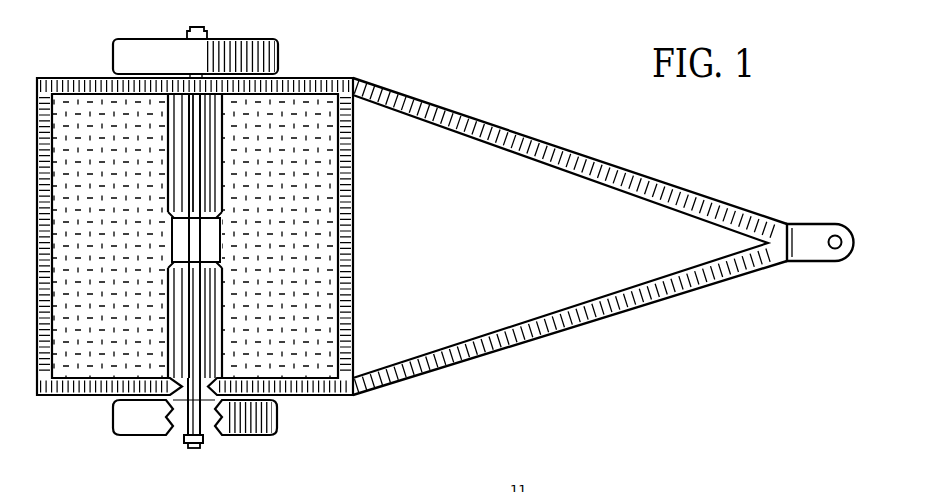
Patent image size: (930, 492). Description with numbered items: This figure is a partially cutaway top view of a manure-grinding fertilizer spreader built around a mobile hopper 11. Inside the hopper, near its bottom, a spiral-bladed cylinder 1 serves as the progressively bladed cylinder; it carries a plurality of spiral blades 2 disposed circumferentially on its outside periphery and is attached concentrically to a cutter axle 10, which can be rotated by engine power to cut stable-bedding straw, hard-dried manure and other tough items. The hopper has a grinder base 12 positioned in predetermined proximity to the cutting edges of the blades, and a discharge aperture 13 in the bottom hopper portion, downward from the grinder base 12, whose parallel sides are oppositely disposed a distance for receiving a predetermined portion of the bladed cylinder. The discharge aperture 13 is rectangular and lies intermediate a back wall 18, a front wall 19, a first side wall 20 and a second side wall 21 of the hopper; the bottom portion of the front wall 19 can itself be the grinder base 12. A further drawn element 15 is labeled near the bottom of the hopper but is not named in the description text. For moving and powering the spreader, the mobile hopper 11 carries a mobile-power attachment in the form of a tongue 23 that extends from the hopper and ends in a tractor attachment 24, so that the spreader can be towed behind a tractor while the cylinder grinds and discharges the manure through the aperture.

The spiral-bladed cylinder 1 is at (185, 152).
The spiral blades 2 is at (192, 133).
The cutter axle 10 is at (193, 410).
The mobile hopper 11 is at (446, 62).
The grinder base 12 is at (222, 231).
The discharge aperture 13 is at (209, 243).
The lower wheel 15 is at (255, 420).
The back wall 18 is at (107, 317).
The front wall 19 is at (250, 309).
The first side wall 20 is at (307, 93).
The second side wall 21 is at (279, 378).
The tongue 23 is at (608, 301).
The tractor attachment 24 is at (825, 228).